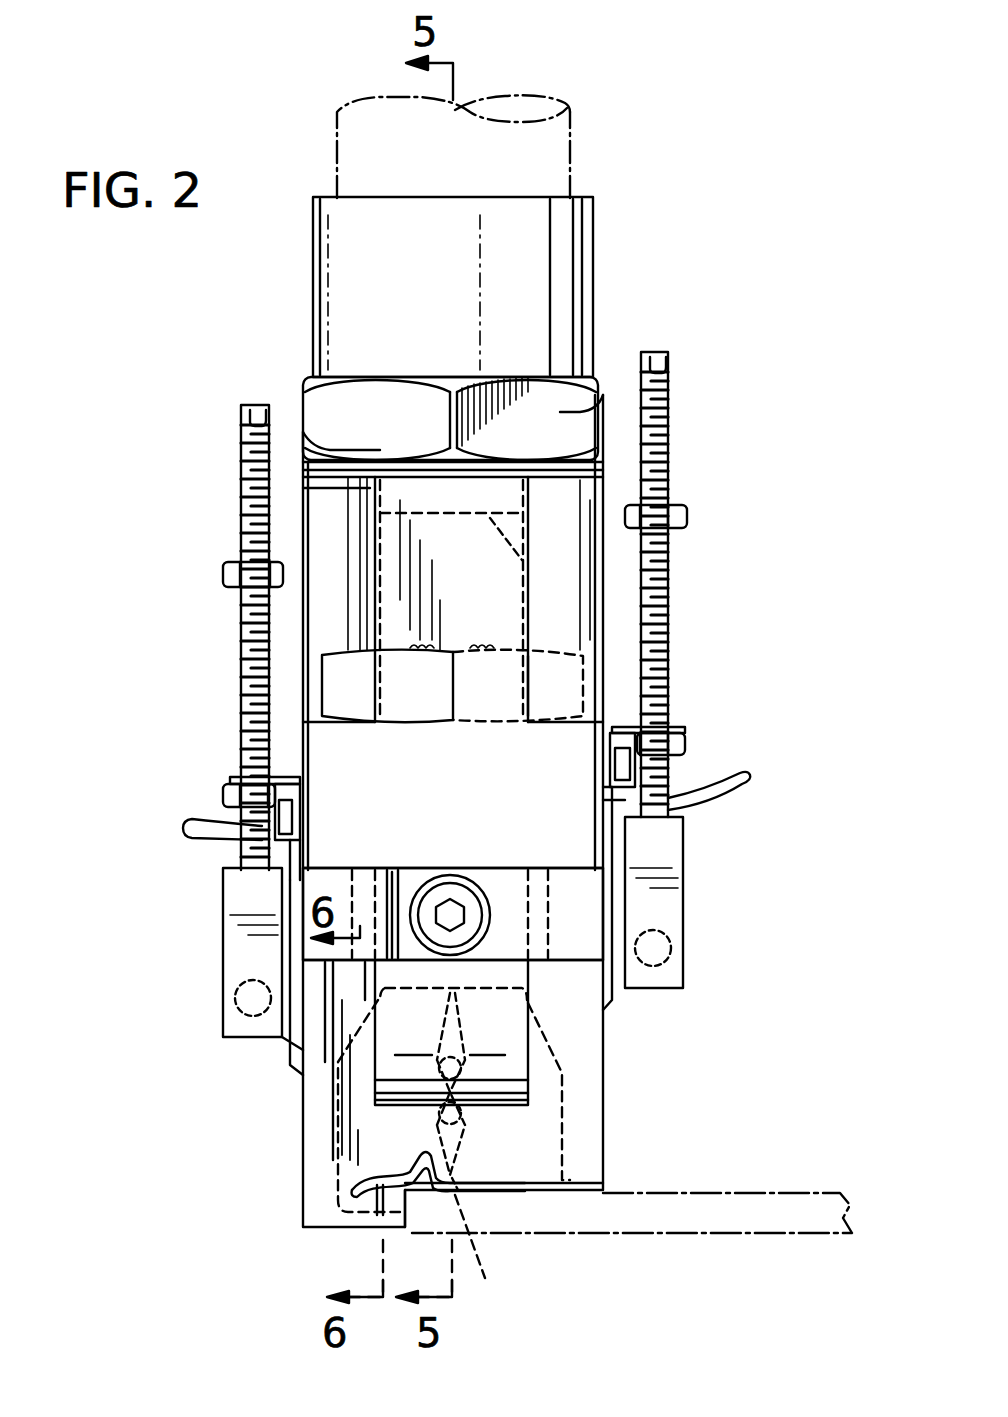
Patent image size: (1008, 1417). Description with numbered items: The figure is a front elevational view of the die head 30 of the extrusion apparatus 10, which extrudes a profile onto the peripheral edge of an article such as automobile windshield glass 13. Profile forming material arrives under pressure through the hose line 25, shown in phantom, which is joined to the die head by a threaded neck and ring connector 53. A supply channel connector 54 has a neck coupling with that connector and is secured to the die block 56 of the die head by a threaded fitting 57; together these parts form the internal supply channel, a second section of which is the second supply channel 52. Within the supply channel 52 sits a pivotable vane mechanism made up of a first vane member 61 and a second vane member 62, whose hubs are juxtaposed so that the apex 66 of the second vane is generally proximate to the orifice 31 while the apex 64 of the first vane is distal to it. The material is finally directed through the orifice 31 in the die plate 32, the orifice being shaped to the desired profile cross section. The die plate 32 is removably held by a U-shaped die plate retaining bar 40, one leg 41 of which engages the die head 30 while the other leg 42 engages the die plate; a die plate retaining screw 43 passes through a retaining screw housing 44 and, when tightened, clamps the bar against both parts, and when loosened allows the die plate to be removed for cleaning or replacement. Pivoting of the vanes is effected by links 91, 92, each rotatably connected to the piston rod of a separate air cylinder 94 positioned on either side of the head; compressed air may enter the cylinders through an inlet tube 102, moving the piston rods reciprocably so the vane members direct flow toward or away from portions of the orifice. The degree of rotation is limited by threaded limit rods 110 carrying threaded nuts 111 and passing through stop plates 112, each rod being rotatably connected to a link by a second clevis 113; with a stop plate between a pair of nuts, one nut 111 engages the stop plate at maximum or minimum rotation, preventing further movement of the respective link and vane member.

The extrusion apparatus 10 is at (242, 1138).
The automobile windshield glass 13 is at (790, 1195).
The hose line 25 is at (565, 140).
The die head 30 is at (598, 863).
The orifice 31 is at (480, 1185).
The die plate 32 is at (548, 1138).
The U-shaped die plate retaining bar 40 is at (518, 796).
The leg 41 is at (522, 560).
The leg 42 is at (520, 1095).
The die plate retaining screw 43 is at (452, 893).
The retaining screw housing 44 is at (392, 868).
The second supply channel 52 is at (555, 1116).
The threaded neck and ring connector 53 is at (578, 282).
The supply channel connector 54 is at (612, 478).
The die block 56 is at (612, 832).
The threaded fitting 57 is at (575, 680).
The first vane member 61 is at (488, 1040).
The second vane member 62 is at (462, 1176).
The apex 64 is at (528, 990).
The apex 66 is at (484, 1257).
The link 91 is at (615, 990).
The link 92 is at (300, 1042).
The air cylinder 94 is at (313, 607).
The inlet tube 102 is at (198, 842).
The threaded limit rod 110 is at (248, 482).
The threaded nut 111 is at (222, 578).
The stop plate 112 is at (234, 780).
The second clevis 113 is at (240, 904).